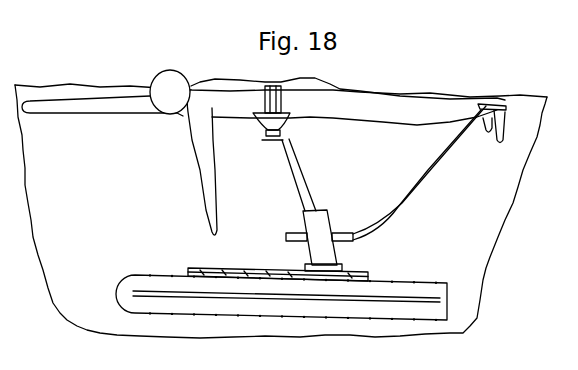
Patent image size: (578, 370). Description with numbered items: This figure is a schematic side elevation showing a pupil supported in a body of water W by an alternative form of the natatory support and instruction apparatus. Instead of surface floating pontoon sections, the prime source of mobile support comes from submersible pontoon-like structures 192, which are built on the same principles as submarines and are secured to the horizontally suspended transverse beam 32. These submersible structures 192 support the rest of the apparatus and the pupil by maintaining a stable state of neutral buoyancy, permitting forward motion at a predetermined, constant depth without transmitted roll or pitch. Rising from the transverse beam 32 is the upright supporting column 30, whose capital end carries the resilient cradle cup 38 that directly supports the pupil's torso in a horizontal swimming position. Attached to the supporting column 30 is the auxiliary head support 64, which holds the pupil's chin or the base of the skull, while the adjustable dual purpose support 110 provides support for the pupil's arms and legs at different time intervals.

The upright supporting column 30 is at (307, 183).
The horizontally suspended transverse beam 32 is at (344, 270).
The resilient cradle cup 38 is at (288, 119).
The auxiliary head support 64 is at (184, 120).
The dual purpose support 110 is at (429, 186).
The submersible pontoon-like structures 192 is at (158, 270).
The body of water W is at (484, 272).